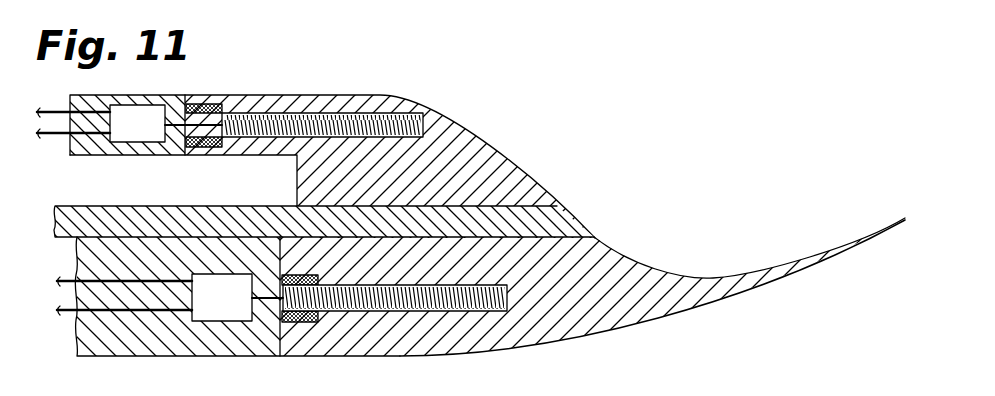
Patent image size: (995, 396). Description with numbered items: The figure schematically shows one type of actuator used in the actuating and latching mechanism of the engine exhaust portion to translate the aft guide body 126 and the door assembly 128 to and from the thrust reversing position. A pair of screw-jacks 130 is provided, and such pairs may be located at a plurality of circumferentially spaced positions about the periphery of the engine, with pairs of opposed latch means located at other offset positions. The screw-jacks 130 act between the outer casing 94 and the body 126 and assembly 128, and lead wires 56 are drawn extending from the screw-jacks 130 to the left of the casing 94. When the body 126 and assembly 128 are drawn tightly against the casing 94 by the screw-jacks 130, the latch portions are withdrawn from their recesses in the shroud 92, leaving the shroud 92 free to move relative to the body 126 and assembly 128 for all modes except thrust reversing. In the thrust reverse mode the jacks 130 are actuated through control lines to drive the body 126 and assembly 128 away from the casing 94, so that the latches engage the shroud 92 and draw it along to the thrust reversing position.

The lead wires 56 is at (62, 299).
The shroud 92 is at (578, 226).
The outer casing 94 is at (185, 357).
The aft guide body 126 is at (485, 148).
The door assembly 128 is at (575, 332).
The screw-jacks 130 is at (156, 137).